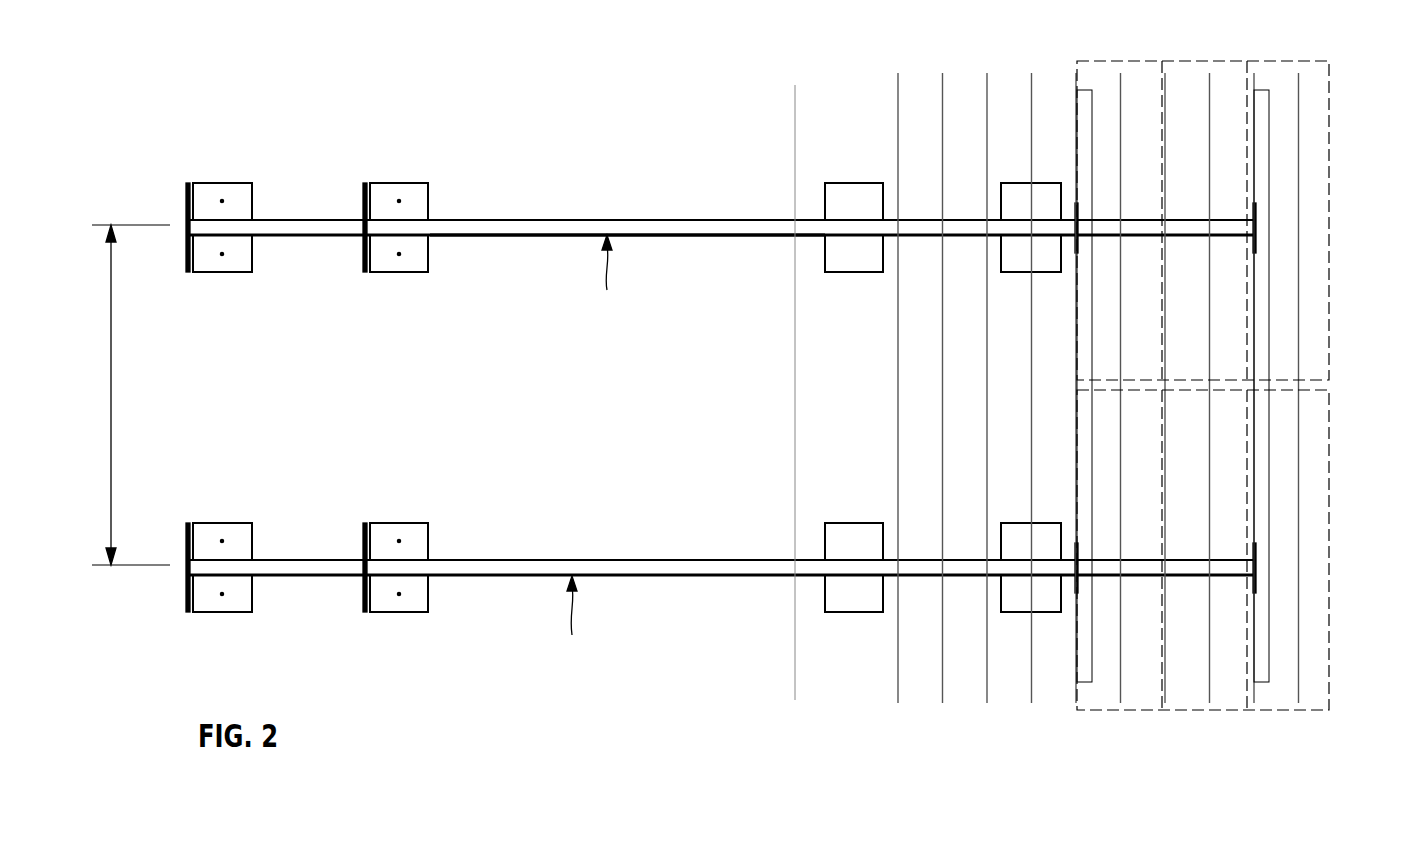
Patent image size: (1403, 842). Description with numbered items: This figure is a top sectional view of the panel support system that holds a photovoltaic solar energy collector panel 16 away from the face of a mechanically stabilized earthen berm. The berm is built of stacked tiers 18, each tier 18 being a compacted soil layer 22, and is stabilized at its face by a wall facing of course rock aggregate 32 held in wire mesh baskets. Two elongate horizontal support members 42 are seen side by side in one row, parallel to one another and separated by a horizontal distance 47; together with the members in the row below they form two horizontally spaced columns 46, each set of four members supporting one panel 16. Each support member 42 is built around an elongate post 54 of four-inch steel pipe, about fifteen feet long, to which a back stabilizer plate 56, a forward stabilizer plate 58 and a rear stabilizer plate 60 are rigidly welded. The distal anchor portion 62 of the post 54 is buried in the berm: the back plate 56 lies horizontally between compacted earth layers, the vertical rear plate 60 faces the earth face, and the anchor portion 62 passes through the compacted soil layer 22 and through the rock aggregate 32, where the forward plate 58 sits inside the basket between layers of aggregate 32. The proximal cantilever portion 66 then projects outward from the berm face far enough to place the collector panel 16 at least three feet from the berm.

The photovoltaic solar energy collector panel 16 is at (1329, 428).
The tier 18 is at (759, 560).
The compacted soil layer 22 is at (768, 212).
The course rock aggregate 32 is at (847, 112).
The support member 42 is at (537, 218).
The column 46 is at (589, 447).
The horizontal distance 47 is at (111, 418).
The post 54 is at (645, 218).
The back stabilizer plate 56 is at (227, 181).
The forward stabilizer plate 58 is at (820, 254).
The rear stabilizer plate 60 is at (184, 203).
The distal anchor portion 62 is at (497, 238).
The proximal cantilever portion 66 is at (962, 218).